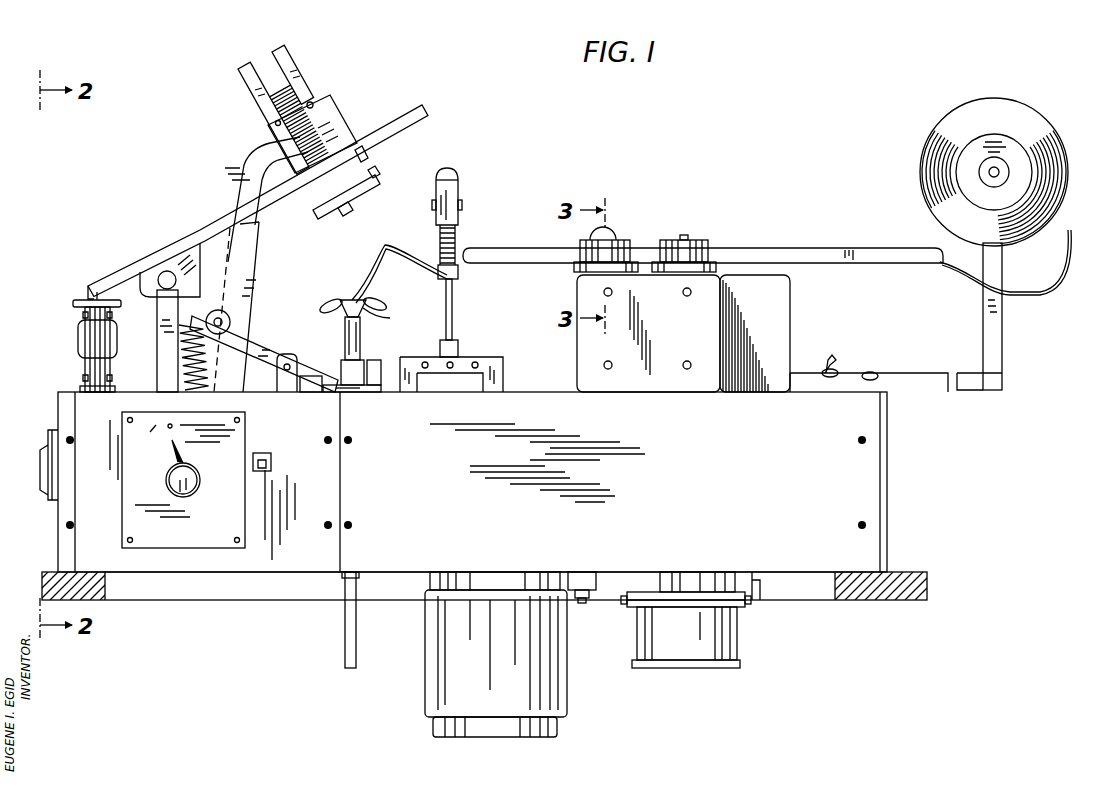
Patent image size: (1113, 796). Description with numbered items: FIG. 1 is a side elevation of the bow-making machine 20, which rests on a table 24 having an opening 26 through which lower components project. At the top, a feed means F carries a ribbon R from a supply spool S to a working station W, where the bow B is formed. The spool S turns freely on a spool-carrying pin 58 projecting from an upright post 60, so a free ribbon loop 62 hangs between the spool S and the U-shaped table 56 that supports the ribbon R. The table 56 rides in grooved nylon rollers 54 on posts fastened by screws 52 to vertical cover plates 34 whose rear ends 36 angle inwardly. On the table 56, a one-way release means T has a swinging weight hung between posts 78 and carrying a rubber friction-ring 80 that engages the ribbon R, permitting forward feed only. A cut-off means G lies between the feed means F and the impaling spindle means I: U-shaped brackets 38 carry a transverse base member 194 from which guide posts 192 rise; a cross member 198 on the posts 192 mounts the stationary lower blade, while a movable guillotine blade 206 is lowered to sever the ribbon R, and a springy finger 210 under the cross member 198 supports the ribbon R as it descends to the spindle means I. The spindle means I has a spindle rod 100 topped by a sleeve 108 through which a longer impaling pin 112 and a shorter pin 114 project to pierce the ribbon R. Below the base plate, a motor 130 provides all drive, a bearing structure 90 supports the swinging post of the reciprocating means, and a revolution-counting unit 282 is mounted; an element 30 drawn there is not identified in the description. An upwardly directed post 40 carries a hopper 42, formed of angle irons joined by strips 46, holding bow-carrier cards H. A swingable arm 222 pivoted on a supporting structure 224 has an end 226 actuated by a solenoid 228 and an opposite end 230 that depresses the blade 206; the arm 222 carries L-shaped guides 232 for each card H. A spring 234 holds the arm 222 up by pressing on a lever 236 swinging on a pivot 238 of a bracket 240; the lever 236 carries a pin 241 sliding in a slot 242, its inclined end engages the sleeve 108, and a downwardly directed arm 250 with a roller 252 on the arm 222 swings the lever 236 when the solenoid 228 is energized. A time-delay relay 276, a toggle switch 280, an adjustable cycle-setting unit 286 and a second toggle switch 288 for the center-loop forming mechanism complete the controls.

The machine 20 is at (950, 455).
The table 24 is at (898, 600).
The opening 26 is at (808, 598).
The drive shaft 30 is at (733, 618).
The vertical cover plates 34 is at (578, 368).
The rear ends 36 is at (790, 313).
The brackets 38 is at (500, 360).
The post 40 is at (240, 192).
The hopper 42 is at (336, 112).
The strips 46 is at (312, 103).
The screws 52 is at (615, 352).
The nylon rollers 54 is at (700, 240).
The table 56 is at (815, 250).
The spool-carrying pin 58 is at (1010, 164).
The upright post 60 is at (1002, 340).
The free ribbon loop 62 is at (1042, 293).
The posts 78 is at (600, 240).
The friction-ring 80 is at (606, 236).
The bearing structure 90 is at (596, 600).
The spindle member 100 is at (344, 648).
The sleeve 108 is at (362, 372).
The impaling pin 112 is at (344, 298).
The impaling pin 114 is at (394, 313).
The motor 130 is at (555, 708).
The guide posts 192 is at (455, 304).
The transverse base member 194 is at (458, 348).
The transverse cross member 198 is at (460, 272).
The movable guillotine cutter blade 206 is at (460, 210).
The springy finger 210 is at (390, 272).
The swingable arm 222 is at (268, 224).
The supporting structure 224 is at (172, 302).
The end 226 is at (140, 278).
The solenoid 228 is at (85, 366).
The opposite end 230 is at (413, 106).
The guides 232 is at (368, 180).
The spring 234 is at (178, 380).
The lever 236 is at (255, 346).
The pivot 238 is at (293, 390).
The bracket 240 is at (283, 376).
The pin 241 is at (338, 392).
The slot 242 is at (348, 390).
The downwardly directed arm 250 is at (195, 258).
The roller 252 is at (228, 316).
The time-delay relay 276 is at (40, 433).
The toggle switch 280 is at (843, 355).
The revolution-counting unit 282 is at (690, 662).
The adjustable unit 286 is at (185, 480).
The second toggle switch 288 is at (262, 474).
The supply spool S is at (1006, 108).
The ribbon R is at (1072, 232).
The bow-carrier H is at (330, 196).
The working station W is at (348, 272).
The cut-off means G is at (502, 214).
The one-way release means T is at (642, 236).
The feed means F is at (745, 250).
The impaling spindle means I is at (340, 338).
The bow B is at (372, 316).